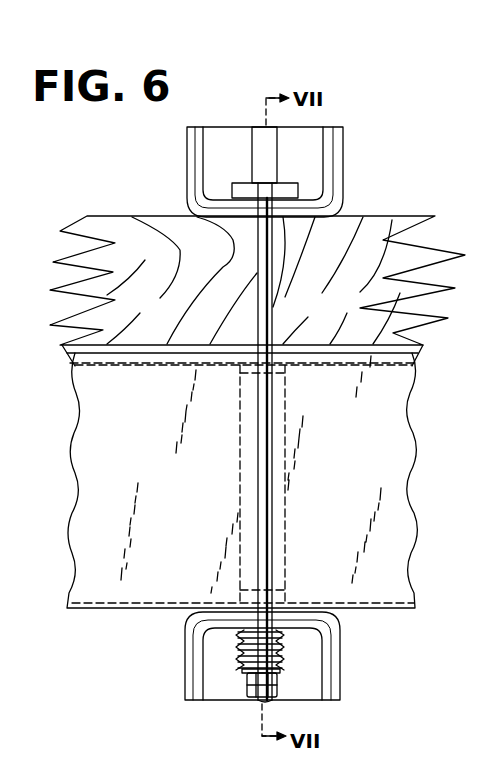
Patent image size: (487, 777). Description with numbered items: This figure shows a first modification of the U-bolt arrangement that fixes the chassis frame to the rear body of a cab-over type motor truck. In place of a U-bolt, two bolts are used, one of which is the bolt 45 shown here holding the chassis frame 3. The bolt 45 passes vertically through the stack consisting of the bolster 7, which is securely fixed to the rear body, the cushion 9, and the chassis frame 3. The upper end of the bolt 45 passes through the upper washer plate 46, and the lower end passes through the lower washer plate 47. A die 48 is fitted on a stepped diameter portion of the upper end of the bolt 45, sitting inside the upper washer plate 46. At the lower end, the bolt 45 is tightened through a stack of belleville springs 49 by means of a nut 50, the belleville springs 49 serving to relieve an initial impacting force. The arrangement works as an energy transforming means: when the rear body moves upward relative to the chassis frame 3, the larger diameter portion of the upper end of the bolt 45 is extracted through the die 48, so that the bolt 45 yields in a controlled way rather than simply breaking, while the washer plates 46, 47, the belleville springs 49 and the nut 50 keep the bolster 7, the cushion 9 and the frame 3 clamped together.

The chassis frame 3 is at (93, 483).
The bolster 7 is at (165, 228).
The cushion 9 is at (165, 347).
The bolt 45 is at (272, 308).
The washer plate 46 is at (343, 150).
The washer plate 47 is at (340, 655).
The die 48 is at (288, 192).
The belleville springs 49 is at (243, 662).
The nut 50 is at (270, 688).